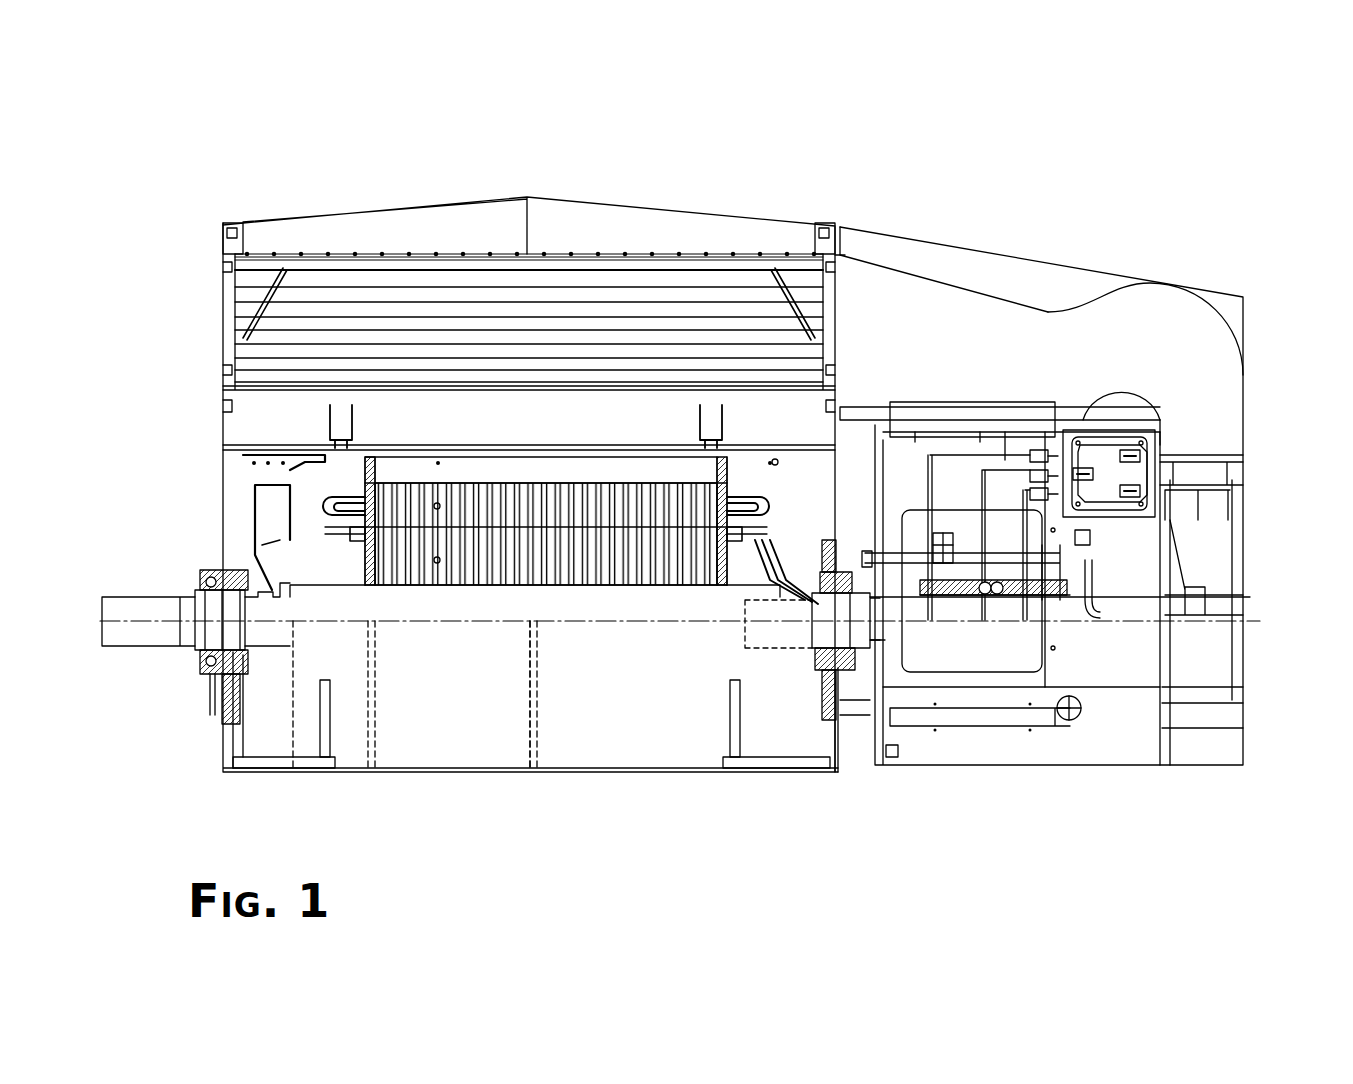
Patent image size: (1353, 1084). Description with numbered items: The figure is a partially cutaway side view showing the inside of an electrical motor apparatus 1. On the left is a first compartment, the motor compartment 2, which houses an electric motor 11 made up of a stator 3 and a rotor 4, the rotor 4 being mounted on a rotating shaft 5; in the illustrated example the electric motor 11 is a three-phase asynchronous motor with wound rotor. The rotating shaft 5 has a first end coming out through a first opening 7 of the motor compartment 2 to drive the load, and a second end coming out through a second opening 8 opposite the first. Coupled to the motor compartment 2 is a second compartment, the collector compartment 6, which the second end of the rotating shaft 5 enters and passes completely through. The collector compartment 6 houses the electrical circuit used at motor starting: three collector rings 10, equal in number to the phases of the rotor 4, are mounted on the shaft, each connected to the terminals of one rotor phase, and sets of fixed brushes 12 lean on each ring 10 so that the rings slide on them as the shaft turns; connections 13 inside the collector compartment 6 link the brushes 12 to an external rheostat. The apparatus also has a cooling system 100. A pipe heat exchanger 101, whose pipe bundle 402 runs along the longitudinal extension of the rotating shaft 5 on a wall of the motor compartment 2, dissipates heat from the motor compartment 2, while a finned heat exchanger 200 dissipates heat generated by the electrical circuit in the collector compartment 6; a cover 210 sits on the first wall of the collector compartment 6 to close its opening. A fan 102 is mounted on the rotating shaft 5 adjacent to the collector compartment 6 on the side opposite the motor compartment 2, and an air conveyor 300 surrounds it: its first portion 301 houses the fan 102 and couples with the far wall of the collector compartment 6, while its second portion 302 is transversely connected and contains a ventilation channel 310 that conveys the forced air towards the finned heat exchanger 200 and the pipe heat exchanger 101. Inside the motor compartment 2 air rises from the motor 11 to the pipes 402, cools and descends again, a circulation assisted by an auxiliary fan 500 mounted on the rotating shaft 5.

The electrical motor apparatus 1 is at (578, 840).
The motor compartment 2 is at (636, 780).
The stator 3 is at (437, 500).
The rotor 4 is at (437, 563).
The rotating shaft 5 is at (165, 600).
The collector compartment 6 is at (1030, 770).
The first opening 7 is at (220, 630).
The second opening 8 is at (842, 665).
The collector rings 10 is at (1027, 537).
The electric motor 11 is at (535, 627).
The brushes 12 is at (950, 540).
The connections 13 is at (1150, 495).
The cooling system 100 is at (740, 170).
The heat exchanger 101 is at (505, 240).
The fan 102 is at (1200, 580).
The finned heat exchanger 200 is at (972, 403).
The cover 210 is at (1083, 411).
The air conveyor 300 is at (1254, 290).
The first portion 301 is at (1215, 747).
The second portion 302 is at (1049, 290).
The ventilation channel 310 is at (902, 303).
The pipes 402 is at (245, 362).
The auxiliary fan 500 is at (268, 487).